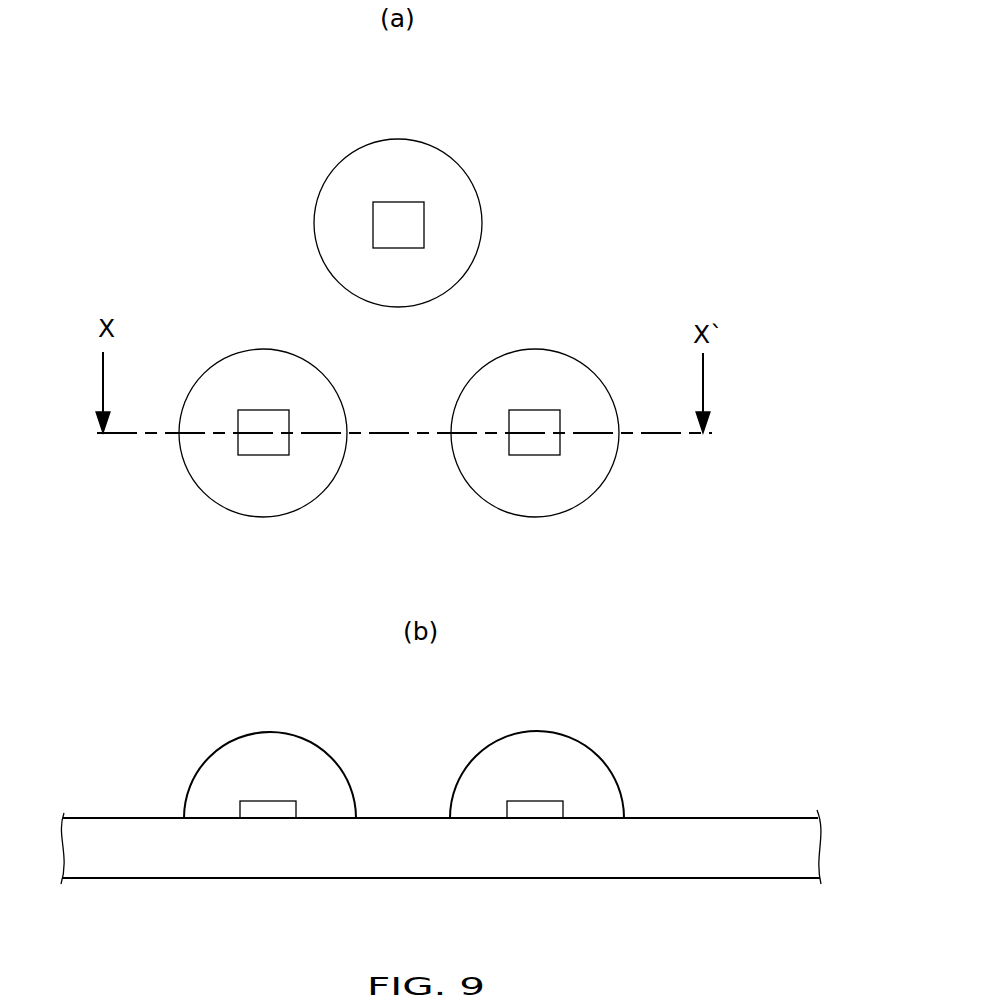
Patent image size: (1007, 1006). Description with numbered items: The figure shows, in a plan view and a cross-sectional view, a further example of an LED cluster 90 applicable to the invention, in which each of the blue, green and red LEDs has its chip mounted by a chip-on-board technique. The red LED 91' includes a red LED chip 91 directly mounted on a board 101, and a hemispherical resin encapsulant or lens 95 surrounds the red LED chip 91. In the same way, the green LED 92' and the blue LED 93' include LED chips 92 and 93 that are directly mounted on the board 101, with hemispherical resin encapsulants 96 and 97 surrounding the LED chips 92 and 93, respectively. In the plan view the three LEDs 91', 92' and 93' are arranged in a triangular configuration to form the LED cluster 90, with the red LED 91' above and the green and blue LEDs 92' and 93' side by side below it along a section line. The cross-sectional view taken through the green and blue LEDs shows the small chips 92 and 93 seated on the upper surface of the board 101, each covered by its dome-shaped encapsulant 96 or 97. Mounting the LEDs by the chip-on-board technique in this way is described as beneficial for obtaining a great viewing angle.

The LED cluster 90 is at (409, 89).
The red LED chip 91 is at (463, 197).
The red LED 91' is at (544, 84).
The green LED chip 92 is at (266, 558).
The green LED 92' is at (167, 292).
The blue LED chip 93 is at (564, 561).
The blue LED 93' is at (679, 299).
The lens 95 is at (352, 188).
The hemispherical resin encapsulant 96 is at (260, 498).
The hemispherical resin encapsulant 97 is at (548, 495).
The board 101 is at (762, 827).